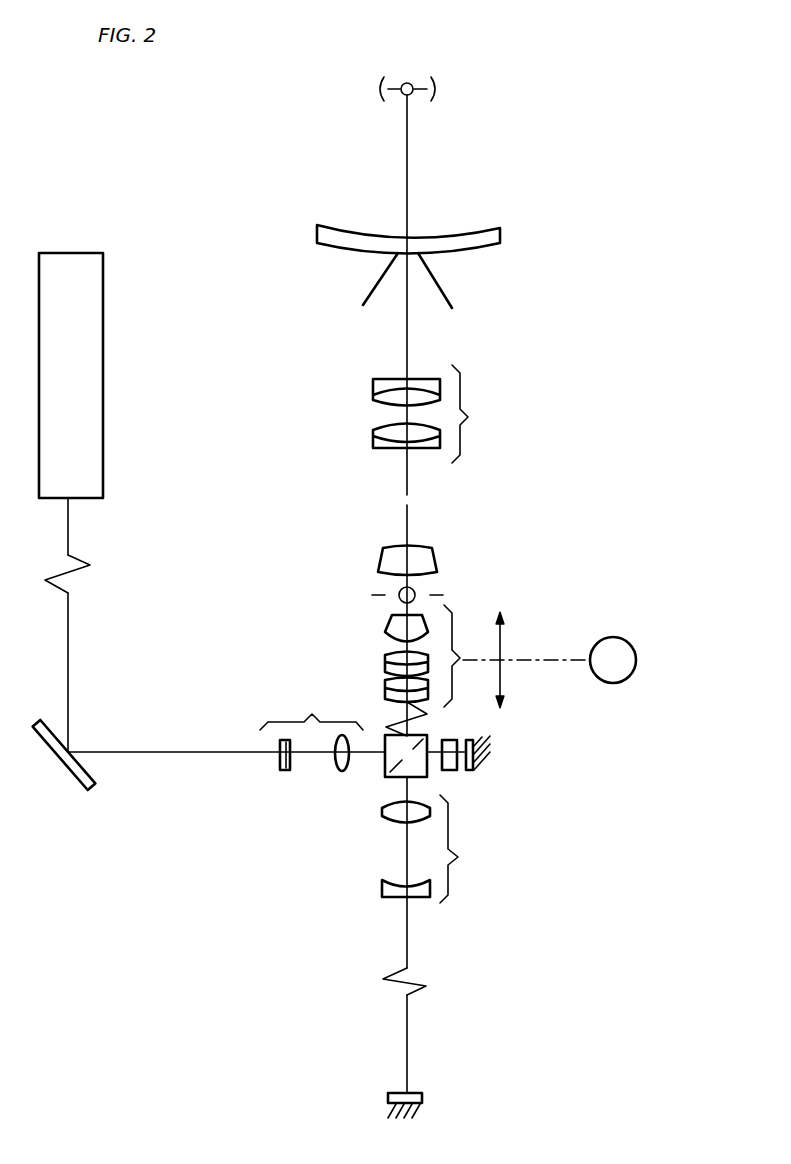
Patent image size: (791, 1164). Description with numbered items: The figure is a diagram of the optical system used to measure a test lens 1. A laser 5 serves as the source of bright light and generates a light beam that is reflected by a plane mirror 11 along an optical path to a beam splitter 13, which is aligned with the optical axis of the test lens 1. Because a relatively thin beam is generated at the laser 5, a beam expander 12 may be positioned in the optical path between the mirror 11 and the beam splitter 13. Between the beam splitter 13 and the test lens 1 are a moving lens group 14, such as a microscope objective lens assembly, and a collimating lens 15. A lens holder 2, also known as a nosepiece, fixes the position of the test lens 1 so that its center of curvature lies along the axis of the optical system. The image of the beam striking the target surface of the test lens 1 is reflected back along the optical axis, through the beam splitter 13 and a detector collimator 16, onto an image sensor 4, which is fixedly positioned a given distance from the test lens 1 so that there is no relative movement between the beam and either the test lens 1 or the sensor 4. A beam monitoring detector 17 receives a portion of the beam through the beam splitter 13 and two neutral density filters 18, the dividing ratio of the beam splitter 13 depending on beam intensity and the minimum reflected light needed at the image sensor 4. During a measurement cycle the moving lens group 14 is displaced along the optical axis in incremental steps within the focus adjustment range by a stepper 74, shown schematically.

The test lens 1 is at (478, 248).
The lens holder 2 is at (445, 290).
The image sensor 4 is at (412, 1093).
The laser 5 is at (103, 376).
The plane mirror 11 is at (62, 770).
The beam expander 12 is at (292, 720).
The beam splitter 13 is at (385, 770).
The moving lens group 14 is at (455, 637).
The collimating lens 15 is at (462, 392).
The detector collimator 16 is at (458, 857).
The beam monitoring detector 17 is at (470, 770).
The neutral density filters 18 is at (450, 740).
The stepper 74 is at (630, 645).